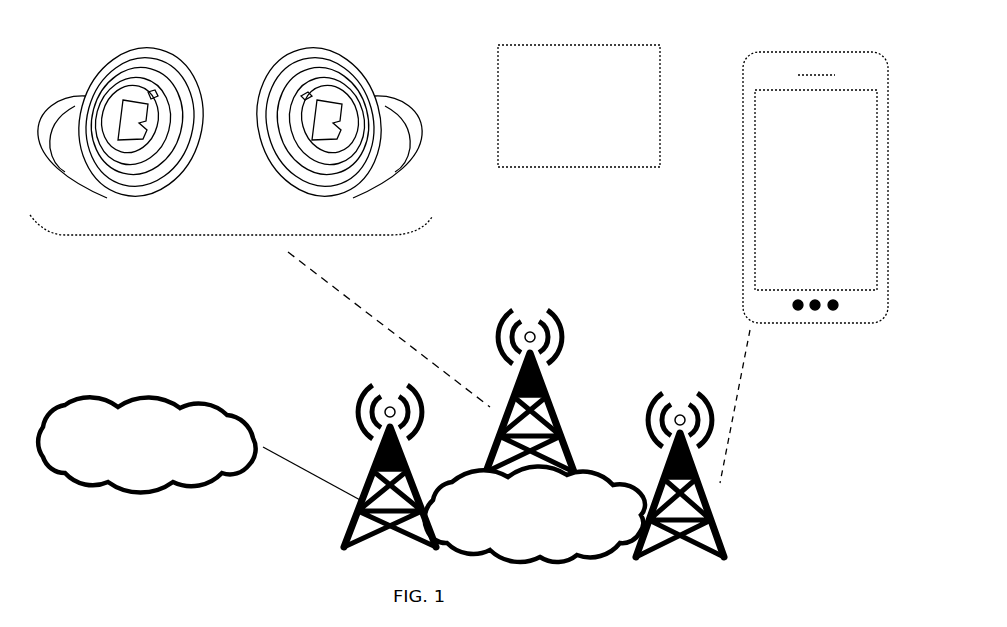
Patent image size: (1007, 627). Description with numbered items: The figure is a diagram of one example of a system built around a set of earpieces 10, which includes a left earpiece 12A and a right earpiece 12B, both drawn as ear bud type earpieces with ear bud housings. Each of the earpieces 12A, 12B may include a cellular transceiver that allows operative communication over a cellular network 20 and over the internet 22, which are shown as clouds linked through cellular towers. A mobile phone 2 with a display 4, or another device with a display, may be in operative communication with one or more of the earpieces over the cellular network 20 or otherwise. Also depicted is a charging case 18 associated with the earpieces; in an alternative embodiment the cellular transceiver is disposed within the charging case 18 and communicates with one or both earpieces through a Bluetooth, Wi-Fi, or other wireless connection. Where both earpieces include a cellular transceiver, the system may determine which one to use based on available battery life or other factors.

The mobile phone 2 is at (786, 168).
The display 4 is at (762, 208).
The set of earpieces 10 is at (220, 236).
The left earpiece 12A is at (135, 50).
The right earpiece 12B is at (326, 50).
The charging case 18 is at (572, 123).
The cellular network 20 is at (634, 488).
The internet 22 is at (204, 410).